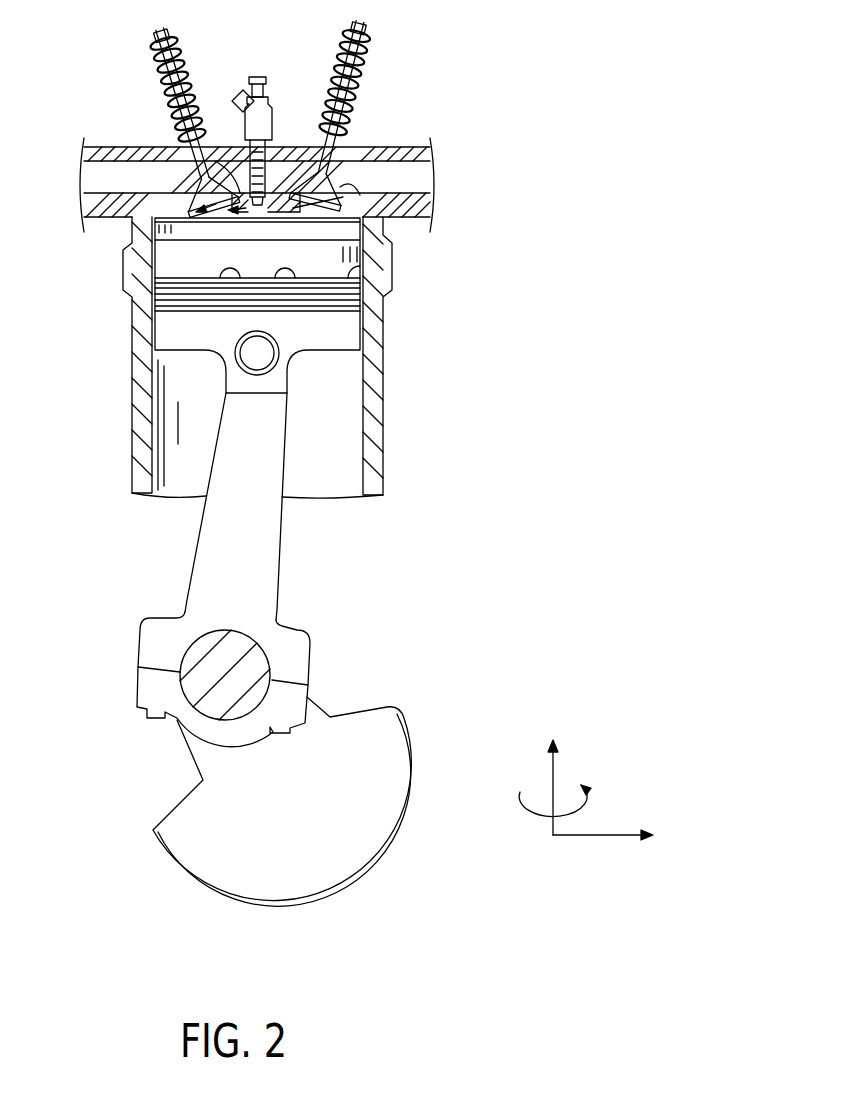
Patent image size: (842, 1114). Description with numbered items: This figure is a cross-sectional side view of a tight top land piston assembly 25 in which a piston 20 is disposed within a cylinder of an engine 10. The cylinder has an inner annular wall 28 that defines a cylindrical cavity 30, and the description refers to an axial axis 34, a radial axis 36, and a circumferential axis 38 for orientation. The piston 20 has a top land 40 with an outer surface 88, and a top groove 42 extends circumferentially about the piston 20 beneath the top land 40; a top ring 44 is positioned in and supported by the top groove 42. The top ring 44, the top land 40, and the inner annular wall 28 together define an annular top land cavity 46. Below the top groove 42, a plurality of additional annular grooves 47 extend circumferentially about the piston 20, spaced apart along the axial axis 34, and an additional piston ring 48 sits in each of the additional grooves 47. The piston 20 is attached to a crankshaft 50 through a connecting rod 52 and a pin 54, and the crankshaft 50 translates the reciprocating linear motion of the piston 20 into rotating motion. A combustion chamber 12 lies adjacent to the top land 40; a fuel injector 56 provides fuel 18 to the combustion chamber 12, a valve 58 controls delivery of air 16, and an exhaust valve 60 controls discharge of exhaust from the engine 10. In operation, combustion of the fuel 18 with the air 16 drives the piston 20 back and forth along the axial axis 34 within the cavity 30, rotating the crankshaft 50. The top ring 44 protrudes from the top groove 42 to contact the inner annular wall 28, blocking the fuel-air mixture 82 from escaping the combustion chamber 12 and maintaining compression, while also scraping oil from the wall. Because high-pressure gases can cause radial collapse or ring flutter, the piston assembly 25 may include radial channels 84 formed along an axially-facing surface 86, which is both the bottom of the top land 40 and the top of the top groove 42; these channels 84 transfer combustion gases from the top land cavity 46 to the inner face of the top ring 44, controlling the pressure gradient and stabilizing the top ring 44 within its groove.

The engine 10 is at (503, 78).
The combustion chamber 12 is at (367, 197).
The air 16 is at (422, 176).
The fuel 18 is at (232, 203).
The piston 20 is at (312, 328).
The piston assembly 25 is at (320, 520).
The inner annular wall 28 is at (362, 456).
The cylindrical cavity 30 is at (201, 486).
The axial axis 34 is at (550, 775).
The radial axis 36 is at (595, 840).
The circumferential axis 38 is at (585, 808).
The top land 40 is at (320, 252).
The top groove 42 is at (353, 268).
The top ring 44 is at (363, 293).
The annular top land cavity 46 is at (153, 275).
The additional annular grooves 47 is at (158, 343).
The additional piston ring 48 is at (156, 297).
The crankshaft 50 is at (197, 822).
The connecting rod 52 is at (262, 593).
The pin 54 is at (259, 362).
The fuel injector 56 is at (267, 90).
The valve 58 is at (358, 30).
The exhaust valve 60 is at (158, 30).
The fuel-air mixture 82 is at (195, 181).
The radial channels 84 is at (285, 268).
The axially-facing surface 86 is at (350, 262).
The outer surface 88 is at (153, 258).